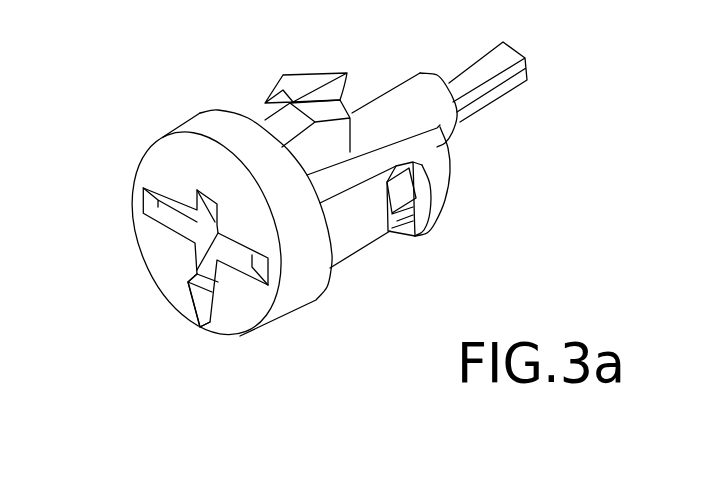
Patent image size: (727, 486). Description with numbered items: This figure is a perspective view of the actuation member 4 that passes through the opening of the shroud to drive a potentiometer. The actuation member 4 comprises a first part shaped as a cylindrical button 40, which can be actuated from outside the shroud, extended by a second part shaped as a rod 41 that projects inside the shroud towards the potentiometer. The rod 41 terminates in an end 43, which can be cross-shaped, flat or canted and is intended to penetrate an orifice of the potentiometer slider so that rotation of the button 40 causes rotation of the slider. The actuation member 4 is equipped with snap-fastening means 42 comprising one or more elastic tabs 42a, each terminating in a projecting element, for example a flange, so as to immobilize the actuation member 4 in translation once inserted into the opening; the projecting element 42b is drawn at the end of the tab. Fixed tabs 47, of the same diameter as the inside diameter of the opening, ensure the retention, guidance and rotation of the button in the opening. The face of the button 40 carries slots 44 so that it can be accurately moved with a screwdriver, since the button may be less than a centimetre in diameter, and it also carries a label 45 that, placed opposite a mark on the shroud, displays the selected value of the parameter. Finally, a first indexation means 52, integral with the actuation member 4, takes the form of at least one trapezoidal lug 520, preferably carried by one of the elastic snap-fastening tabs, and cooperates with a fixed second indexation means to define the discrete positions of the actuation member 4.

The actuation member 4 is at (116, 235).
The first part (cylindrical button) 40 is at (297, 283).
The second part (rod) 41 is at (423, 90).
The snap-fastening means 42 is at (321, 55).
The elastic tab 42a is at (347, 182).
The latch lug 42b is at (440, 177).
The end of the rod (slider actuation end) 43 is at (527, 60).
The slots 44 is at (257, 270).
The label 45 is at (200, 302).
The fixed tabs 47 is at (278, 123).
The first indexation means 52 is at (419, 250).
The lug 520 is at (394, 222).